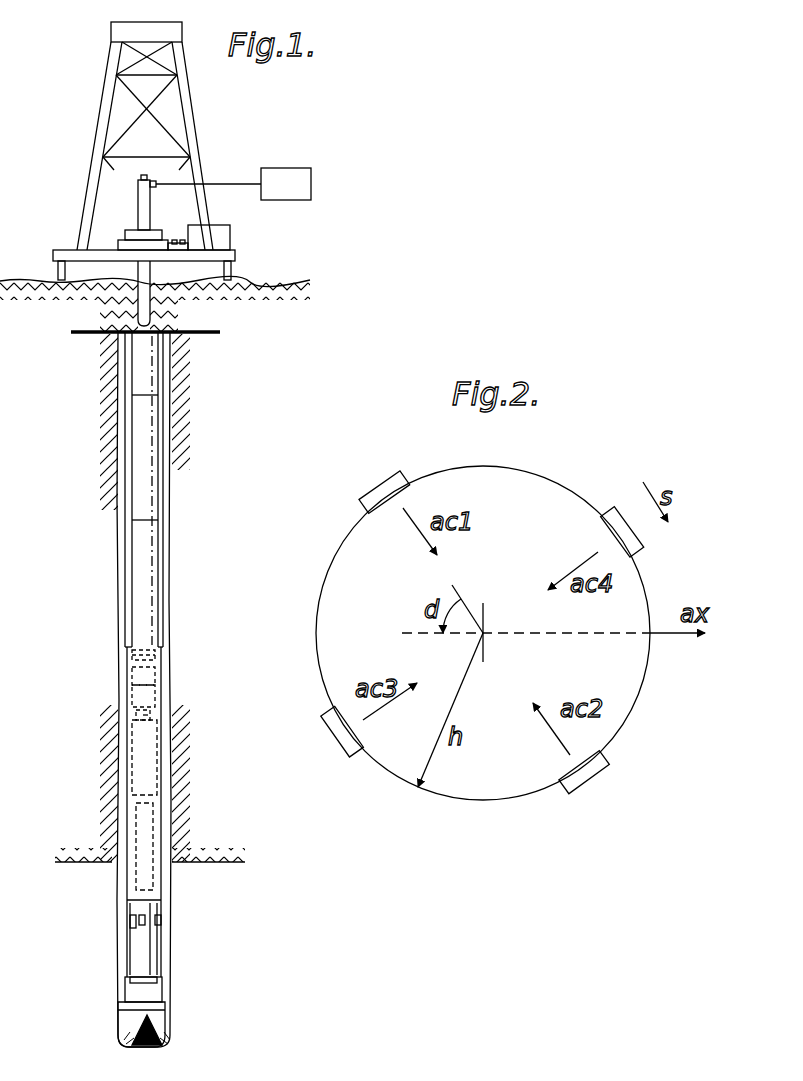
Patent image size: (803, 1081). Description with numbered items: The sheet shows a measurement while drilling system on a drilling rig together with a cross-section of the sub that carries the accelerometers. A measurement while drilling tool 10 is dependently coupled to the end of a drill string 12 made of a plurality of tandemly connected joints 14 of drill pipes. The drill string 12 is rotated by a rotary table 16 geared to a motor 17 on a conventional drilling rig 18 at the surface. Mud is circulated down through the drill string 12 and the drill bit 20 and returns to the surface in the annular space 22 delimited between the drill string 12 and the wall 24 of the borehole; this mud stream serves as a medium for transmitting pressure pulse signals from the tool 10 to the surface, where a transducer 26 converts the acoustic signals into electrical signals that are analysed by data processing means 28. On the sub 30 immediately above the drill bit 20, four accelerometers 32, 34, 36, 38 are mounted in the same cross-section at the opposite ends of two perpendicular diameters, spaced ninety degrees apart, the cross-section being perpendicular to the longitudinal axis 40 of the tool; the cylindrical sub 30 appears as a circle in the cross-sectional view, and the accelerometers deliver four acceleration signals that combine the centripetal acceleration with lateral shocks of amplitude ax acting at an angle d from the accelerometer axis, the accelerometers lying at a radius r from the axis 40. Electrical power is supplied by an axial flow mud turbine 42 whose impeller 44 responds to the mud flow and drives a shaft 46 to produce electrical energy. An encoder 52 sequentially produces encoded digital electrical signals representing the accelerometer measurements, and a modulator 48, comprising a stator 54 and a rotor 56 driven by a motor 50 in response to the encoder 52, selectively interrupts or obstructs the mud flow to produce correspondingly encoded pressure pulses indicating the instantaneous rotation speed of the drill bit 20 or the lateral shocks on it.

In FIG. 1, the measurement while drilling tool 10 is at (124, 831).
In FIG. 1, the drill string 12 is at (143, 300).
In FIG. 1, the joints of drill pipes 14 is at (152, 370).
In FIG. 1, the rotary table 16 is at (136, 230).
In FIG. 1, the motor 17 is at (230, 236).
In FIG. 1, the drilling rig 18 is at (86, 131).
In FIG. 1, the drill bit 20 is at (158, 1028).
In FIG. 1, the annular space 22 is at (168, 512).
In FIG. 1, the wall of the borehole 24 is at (119, 566).
In FIG. 1, the transducer 26 is at (152, 186).
In FIG. 1, the data processing means 28 is at (293, 168).
In FIG. 1, the sub 30 is at (163, 955).
In FIG. 2, the sub 30 is at (537, 470).
In FIG. 1, the accelerometer 32 is at (130, 925).
In FIG. 2, the accelerometer 32 is at (400, 478).
In FIG. 1, the accelerometer 34 is at (160, 920).
In FIG. 2, the accelerometer 34 is at (572, 800).
In FIG. 1, the accelerometer 36 is at (142, 930).
In FIG. 2, the accelerometer 36 is at (342, 757).
In FIG. 2, the accelerometer 38 is at (611, 513).
In FIG. 2, the longitudinal axis 40 is at (487, 637).
In FIG. 1, the mud turbine 42 is at (141, 748).
In FIG. 1, the impeller 44 is at (150, 716).
In FIG. 1, the shaft 46 is at (157, 718).
In FIG. 1, the modulator 48 is at (125, 661).
In FIG. 1, the motor 50 is at (158, 690).
In FIG. 1, the encoder 52 is at (140, 878).
In FIG. 1, the stator 54 is at (155, 655).
In FIG. 1, the rotor 56 is at (158, 668).